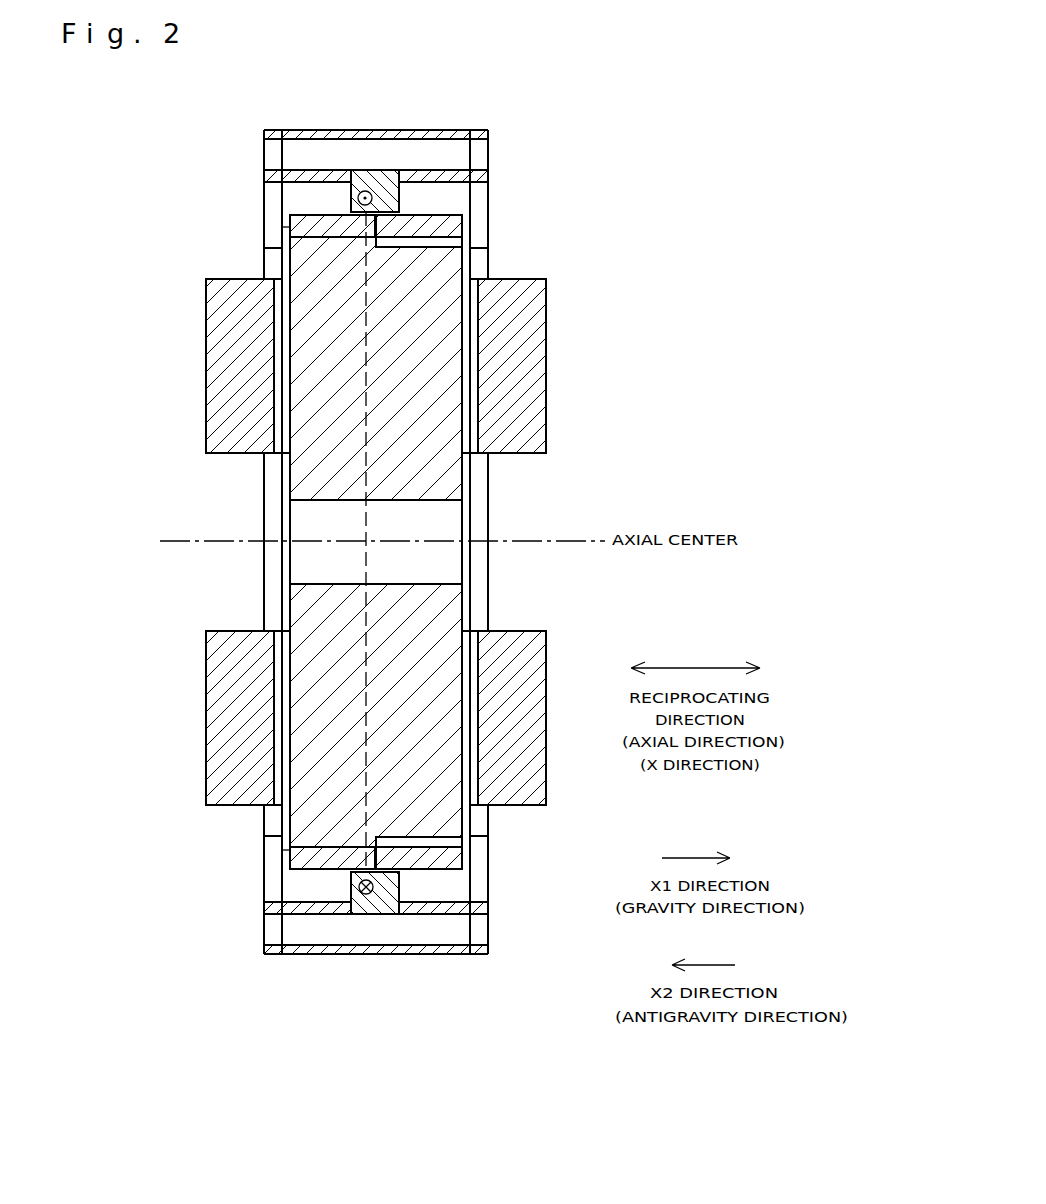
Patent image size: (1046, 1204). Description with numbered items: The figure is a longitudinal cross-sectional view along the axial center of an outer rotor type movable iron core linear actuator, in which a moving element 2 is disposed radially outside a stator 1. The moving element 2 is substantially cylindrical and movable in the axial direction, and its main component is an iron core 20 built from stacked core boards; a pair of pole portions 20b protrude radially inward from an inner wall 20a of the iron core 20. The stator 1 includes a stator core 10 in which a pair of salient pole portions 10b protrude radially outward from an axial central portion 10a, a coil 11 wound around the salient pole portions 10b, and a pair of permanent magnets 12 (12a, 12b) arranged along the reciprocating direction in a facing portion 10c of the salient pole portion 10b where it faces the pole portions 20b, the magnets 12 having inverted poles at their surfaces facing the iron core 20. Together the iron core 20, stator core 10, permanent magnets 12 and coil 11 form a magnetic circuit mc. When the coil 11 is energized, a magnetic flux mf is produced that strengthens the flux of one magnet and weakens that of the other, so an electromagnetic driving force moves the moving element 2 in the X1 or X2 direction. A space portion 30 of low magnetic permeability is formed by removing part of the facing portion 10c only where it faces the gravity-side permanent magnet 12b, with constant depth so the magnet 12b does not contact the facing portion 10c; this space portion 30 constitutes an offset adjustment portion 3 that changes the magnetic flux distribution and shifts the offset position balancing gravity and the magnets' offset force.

The stator 1 is at (571, 443).
The moving element 2 is at (507, 119).
The offset adjustment portion 3 is at (641, 230).
The stator core 10 is at (474, 479).
The axial central portion 10a is at (445, 513).
The salient pole portion 10b is at (310, 370).
The facing portion 10c is at (477, 261).
The coil 11 is at (218, 321).
The permanent magnets 12 is at (298, 862).
The permanent magnet 12a is at (293, 225).
The permanent magnet 12b is at (455, 220).
The iron core 20 is at (383, 119).
The inner wall 20a is at (350, 193).
The pole portion 20b is at (387, 193).
The space portion 30 is at (465, 241).
The magnetic circuit mc is at (639, 400).
The magnetic flux mf is at (365, 512).